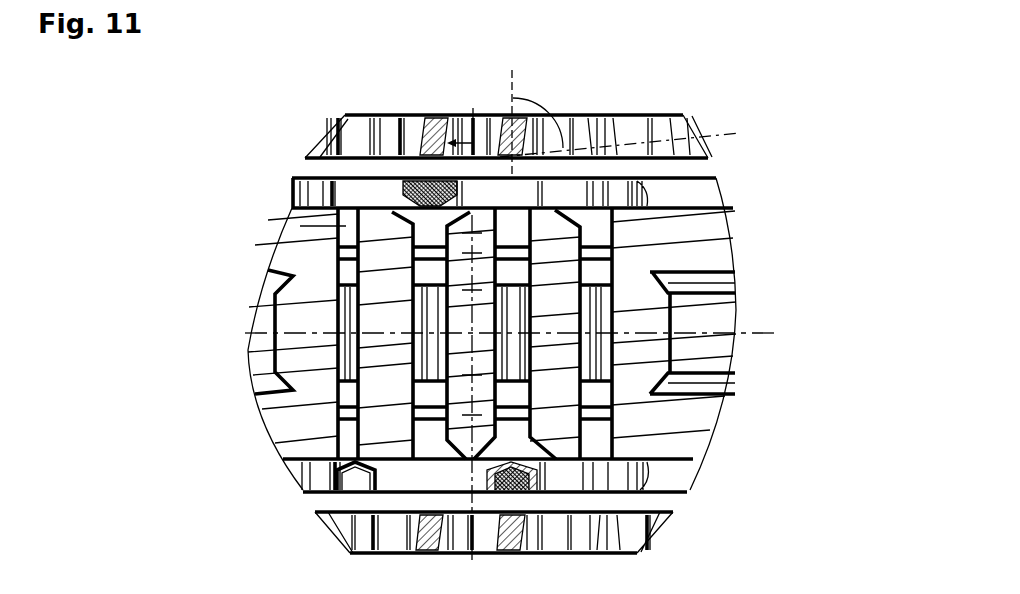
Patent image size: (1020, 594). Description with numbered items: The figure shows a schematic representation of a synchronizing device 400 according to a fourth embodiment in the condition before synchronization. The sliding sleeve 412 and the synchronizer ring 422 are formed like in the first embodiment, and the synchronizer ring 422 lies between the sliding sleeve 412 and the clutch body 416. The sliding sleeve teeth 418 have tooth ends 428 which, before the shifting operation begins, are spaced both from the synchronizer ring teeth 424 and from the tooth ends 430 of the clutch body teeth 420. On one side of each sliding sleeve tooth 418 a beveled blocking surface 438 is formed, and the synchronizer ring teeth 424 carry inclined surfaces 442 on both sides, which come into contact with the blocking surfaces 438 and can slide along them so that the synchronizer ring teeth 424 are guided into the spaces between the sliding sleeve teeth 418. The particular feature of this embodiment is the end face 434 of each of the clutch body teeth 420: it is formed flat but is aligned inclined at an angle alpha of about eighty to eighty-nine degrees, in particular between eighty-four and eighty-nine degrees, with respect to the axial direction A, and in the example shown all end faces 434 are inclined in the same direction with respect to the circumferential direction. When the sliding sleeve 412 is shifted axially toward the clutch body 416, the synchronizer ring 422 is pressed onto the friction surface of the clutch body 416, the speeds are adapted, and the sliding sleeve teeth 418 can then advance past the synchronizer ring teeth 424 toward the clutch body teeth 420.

The synchronizing device 400 is at (190, 198).
The sliding sleeve 412 is at (770, 292).
The clutch body 416 is at (775, 134).
The sliding sleeve teeth 418 is at (388, 259).
The clutch body teeth 420 is at (437, 163).
The synchronizer ring 422 is at (757, 197).
The synchronizer ring teeth 424 is at (333, 188).
The tooth ends 428 is at (348, 226).
The tooth ends 430 is at (470, 185).
The end face 434 is at (428, 148).
The blocking surface 438 is at (407, 211).
The inclined surfaces 442 is at (470, 180).